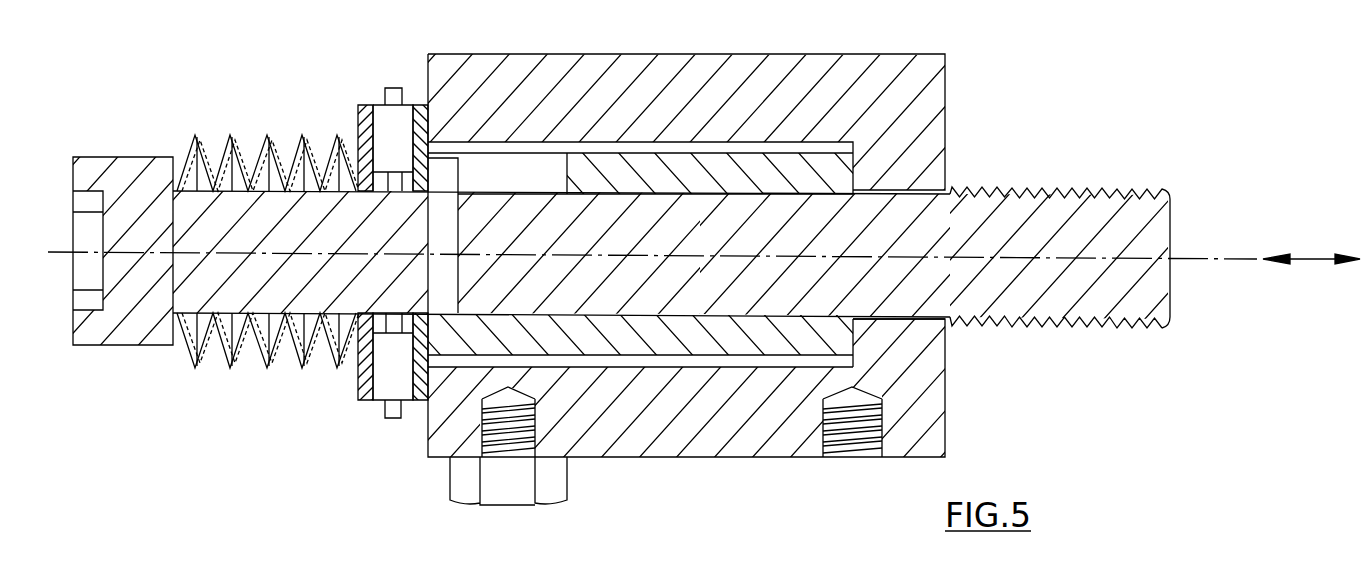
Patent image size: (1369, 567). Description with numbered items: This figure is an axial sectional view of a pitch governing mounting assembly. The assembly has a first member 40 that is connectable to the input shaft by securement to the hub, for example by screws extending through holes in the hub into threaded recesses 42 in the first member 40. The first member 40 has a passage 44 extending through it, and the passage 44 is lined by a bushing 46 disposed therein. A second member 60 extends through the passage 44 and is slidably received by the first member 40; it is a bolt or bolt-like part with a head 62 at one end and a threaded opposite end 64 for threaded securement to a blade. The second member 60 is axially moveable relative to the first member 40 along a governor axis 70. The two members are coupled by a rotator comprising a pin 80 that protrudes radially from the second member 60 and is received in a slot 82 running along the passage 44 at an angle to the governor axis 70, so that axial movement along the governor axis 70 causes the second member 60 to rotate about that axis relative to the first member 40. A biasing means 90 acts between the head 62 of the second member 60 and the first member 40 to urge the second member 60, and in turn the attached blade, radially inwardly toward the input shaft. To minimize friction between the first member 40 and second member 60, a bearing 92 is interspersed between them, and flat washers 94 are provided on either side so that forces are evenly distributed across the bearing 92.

The first member 40 is at (928, 107).
The threaded recesses 42 is at (850, 450).
The passage 44 is at (946, 322).
The bushing 46 is at (708, 167).
The second member 60 is at (262, 238).
The head 62 is at (129, 167).
The threaded end 64 is at (1076, 189).
The governor axis 70 is at (1188, 260).
The pin 80 is at (445, 171).
The slot 82 is at (545, 184).
The biasing means 90 is at (351, 369).
The bearing 92 is at (388, 419).
The flat washers 94 is at (365, 402).